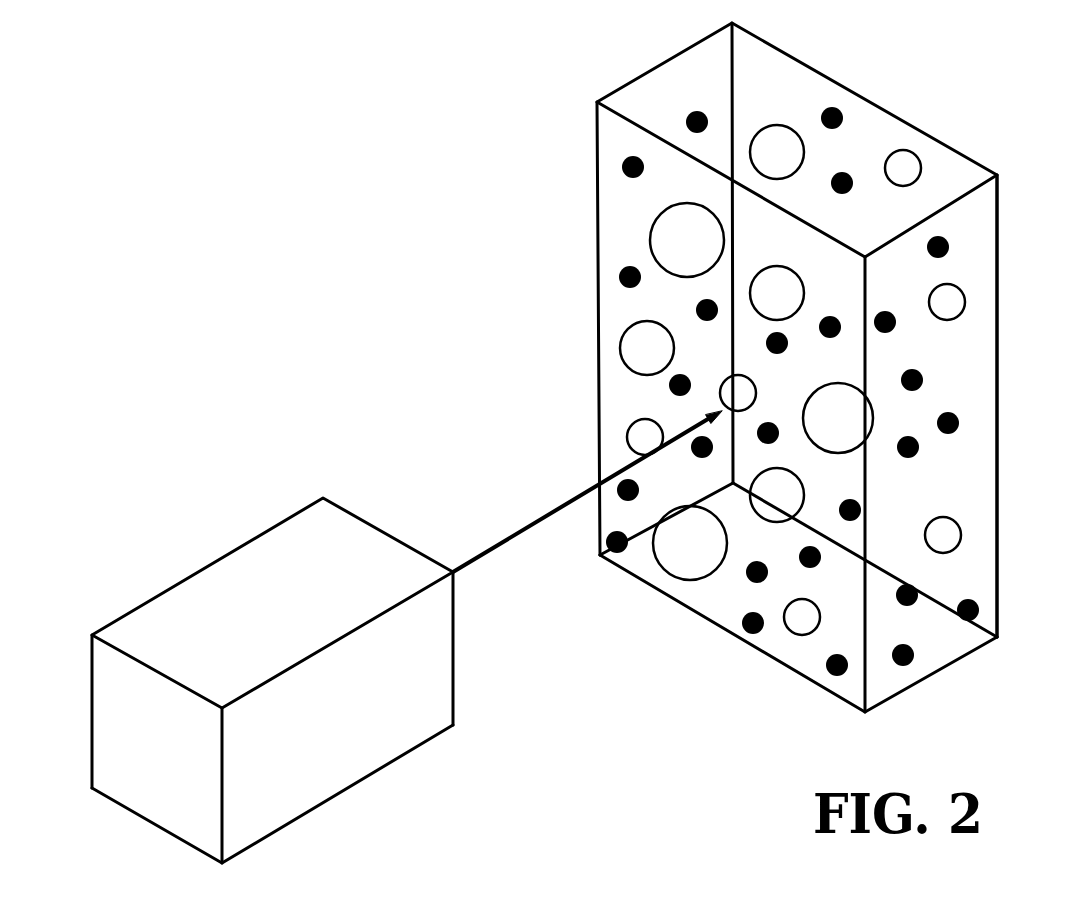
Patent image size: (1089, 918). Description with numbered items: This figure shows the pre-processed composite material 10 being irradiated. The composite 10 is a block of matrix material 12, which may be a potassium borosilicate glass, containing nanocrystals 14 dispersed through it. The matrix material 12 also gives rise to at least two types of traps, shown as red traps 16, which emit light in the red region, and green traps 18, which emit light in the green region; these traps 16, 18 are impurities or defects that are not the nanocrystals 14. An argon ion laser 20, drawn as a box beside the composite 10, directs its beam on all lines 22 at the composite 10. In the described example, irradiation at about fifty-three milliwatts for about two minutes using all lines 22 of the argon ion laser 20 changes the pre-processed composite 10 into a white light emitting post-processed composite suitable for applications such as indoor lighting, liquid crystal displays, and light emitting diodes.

The pre-processed composite material 10 is at (789, 96).
The matrix material 12 is at (1000, 220).
The nanocrystals 14 is at (764, 168).
The red traps 16 is at (843, 111).
The green traps 18 is at (628, 172).
The argon ion laser 20 is at (348, 558).
The lines 22 is at (485, 548).